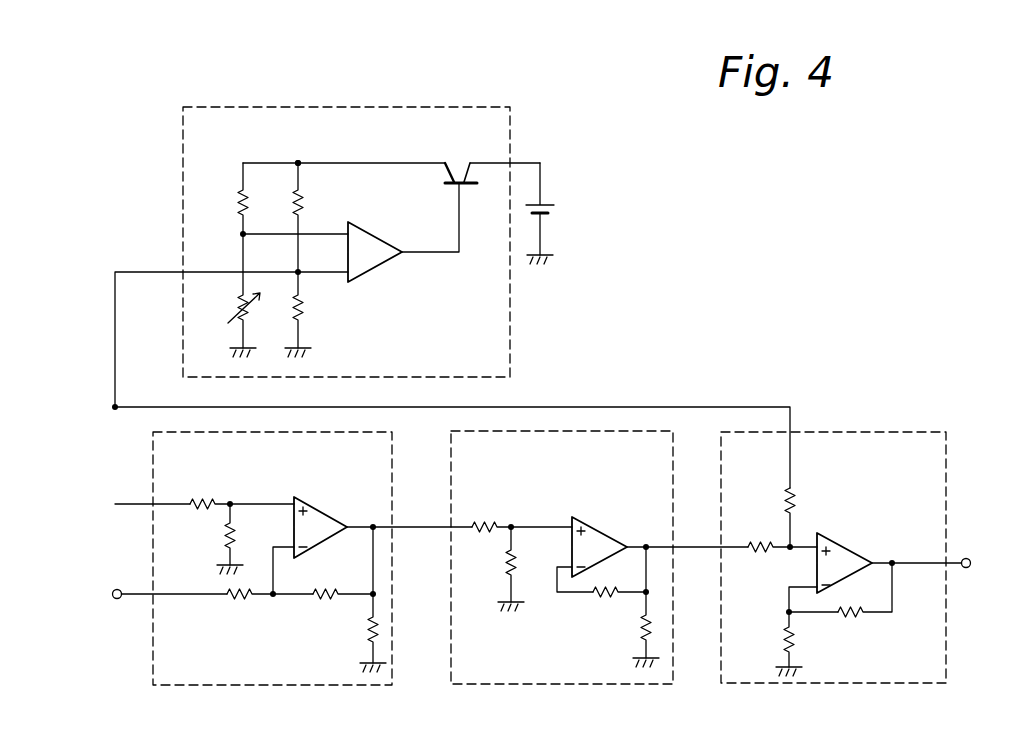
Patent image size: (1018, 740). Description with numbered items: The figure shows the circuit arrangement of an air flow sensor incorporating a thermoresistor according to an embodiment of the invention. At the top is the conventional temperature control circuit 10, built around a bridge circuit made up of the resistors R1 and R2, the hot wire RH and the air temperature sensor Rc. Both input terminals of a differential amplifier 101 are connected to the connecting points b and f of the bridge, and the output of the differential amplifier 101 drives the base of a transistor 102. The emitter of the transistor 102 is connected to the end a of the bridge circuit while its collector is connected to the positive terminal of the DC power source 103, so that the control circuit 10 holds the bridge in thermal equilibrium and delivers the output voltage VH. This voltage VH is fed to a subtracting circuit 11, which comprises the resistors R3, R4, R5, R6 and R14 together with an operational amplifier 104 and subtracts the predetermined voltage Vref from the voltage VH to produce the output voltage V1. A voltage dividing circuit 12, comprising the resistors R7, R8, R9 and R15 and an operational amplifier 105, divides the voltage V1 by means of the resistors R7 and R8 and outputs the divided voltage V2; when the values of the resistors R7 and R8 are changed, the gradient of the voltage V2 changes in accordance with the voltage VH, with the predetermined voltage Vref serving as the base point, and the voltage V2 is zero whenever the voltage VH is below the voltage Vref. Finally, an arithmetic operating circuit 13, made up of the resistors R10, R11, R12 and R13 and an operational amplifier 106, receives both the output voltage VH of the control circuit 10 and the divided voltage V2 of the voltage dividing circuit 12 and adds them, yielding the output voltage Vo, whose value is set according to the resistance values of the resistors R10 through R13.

The temperature control circuit 10 is at (510, 112).
The subtracting circuit 11 is at (152, 658).
The voltage dividing circuit 12 is at (450, 650).
The arithmetic operating circuit 13 is at (948, 658).
The differential amplifier 101 is at (385, 268).
The transistor 102 is at (440, 185).
The DC power source 103 is at (556, 212).
The operational amplifier 104 is at (338, 508).
The operational amplifier 105 is at (612, 535).
The operational amplifier 106 is at (858, 542).
The air temperature sensor Rc is at (237, 208).
The hot wire RH is at (295, 196).
The resistor R1 is at (235, 310).
The resistor R2 is at (304, 308).
The resistor R3 is at (200, 510).
The resistor R4 is at (225, 540).
The resistor R5 is at (242, 600).
The resistor R6 is at (320, 600).
The resistor R7 is at (480, 533).
The resistor R8 is at (506, 565).
The resistor R9 is at (600, 598).
The resistor R10 is at (756, 553).
The resistor R11 is at (786, 500).
The resistor R12 is at (784, 645).
The resistor R13 is at (850, 618).
The resistor R14 is at (368, 630).
The resistor R15 is at (641, 628).
The end of the bridge circuit a is at (301, 166).
The connecting point of the bridge circuit b is at (300, 268).
The connecting point of the bridge circuit f is at (240, 238).
The output voltage of the control circuit VH is at (231, 326).
The output voltage of the subtracting circuit V1 is at (422, 514).
The divided voltage V2 is at (697, 534).
The output voltage of the arithmetic operating circuit Vo is at (945, 565).
The predetermined voltage Vref is at (137, 595).